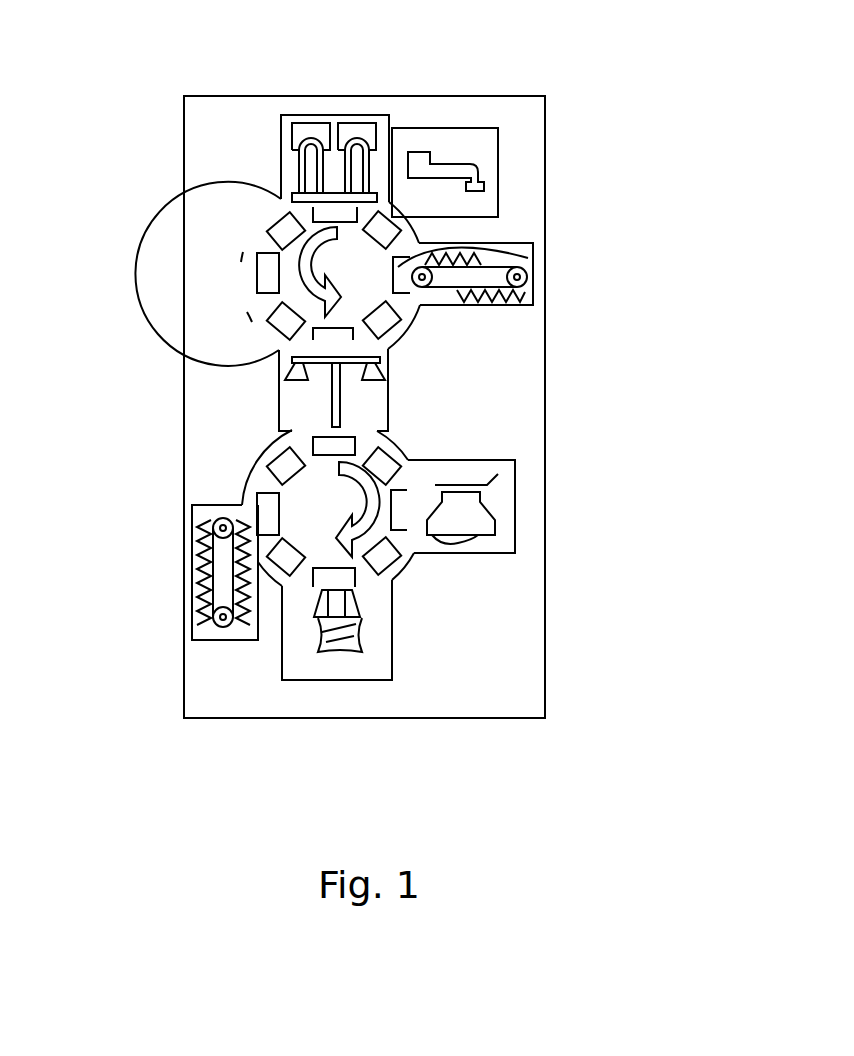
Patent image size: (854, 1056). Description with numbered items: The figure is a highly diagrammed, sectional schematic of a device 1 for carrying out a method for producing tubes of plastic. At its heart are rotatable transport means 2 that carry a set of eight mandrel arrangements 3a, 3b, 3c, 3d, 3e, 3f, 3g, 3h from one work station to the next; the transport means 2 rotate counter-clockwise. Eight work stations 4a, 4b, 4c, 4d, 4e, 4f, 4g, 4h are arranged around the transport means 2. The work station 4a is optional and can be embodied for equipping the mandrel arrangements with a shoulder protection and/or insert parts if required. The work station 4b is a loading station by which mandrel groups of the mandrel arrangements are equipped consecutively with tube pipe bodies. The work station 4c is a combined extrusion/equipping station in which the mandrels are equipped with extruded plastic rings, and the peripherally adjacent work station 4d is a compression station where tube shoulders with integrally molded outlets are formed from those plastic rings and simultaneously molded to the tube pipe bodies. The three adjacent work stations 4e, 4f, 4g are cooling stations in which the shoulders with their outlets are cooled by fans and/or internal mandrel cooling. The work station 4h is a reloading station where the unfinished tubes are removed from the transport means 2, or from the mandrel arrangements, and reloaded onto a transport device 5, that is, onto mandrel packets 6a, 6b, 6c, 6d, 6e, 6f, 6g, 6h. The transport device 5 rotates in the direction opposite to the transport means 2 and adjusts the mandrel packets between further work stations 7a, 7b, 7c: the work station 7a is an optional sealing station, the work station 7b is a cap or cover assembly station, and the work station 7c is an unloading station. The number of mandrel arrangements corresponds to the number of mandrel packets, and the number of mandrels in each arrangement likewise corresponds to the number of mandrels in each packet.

The device 1 is at (399, 737).
The rotatable transport means 2 is at (250, 232).
The mandrel arrangement 3a is at (385, 320).
The mandrel arrangement 3b is at (508, 262).
The mandrel arrangement 3c is at (385, 226).
The mandrel arrangement 3d is at (333, 212).
The mandrel arrangement 3e is at (285, 225).
The mandrel arrangement 3f is at (268, 275).
The mandrel arrangement 3g is at (283, 323).
The mandrel arrangement 3h is at (337, 337).
The optional work station 4a is at (412, 348).
The loading station 4b is at (550, 284).
The combined extrusion/equipping station 4c is at (504, 199).
The compression station 4d is at (336, 78).
The cooling station 4e is at (268, 150).
The cooling station 4f is at (231, 258).
The cooling station 4g is at (241, 322).
The reloading station 4h is at (325, 410).
The transport device 5 is at (285, 467).
The mandrel packet 6a is at (337, 443).
The mandrel packet 6b is at (330, 503).
The mandrel packet 6c is at (270, 520).
The mandrel packet 6d is at (283, 566).
The mandrel packet 6e is at (332, 573).
The mandrel packet 6f is at (388, 562).
The mandrel packet 6g is at (400, 512).
The holder 6h is at (388, 462).
The optional sealing station 7a is at (506, 499).
The cap or cover assembly station 7b is at (343, 672).
The unloading station 7c is at (188, 628).